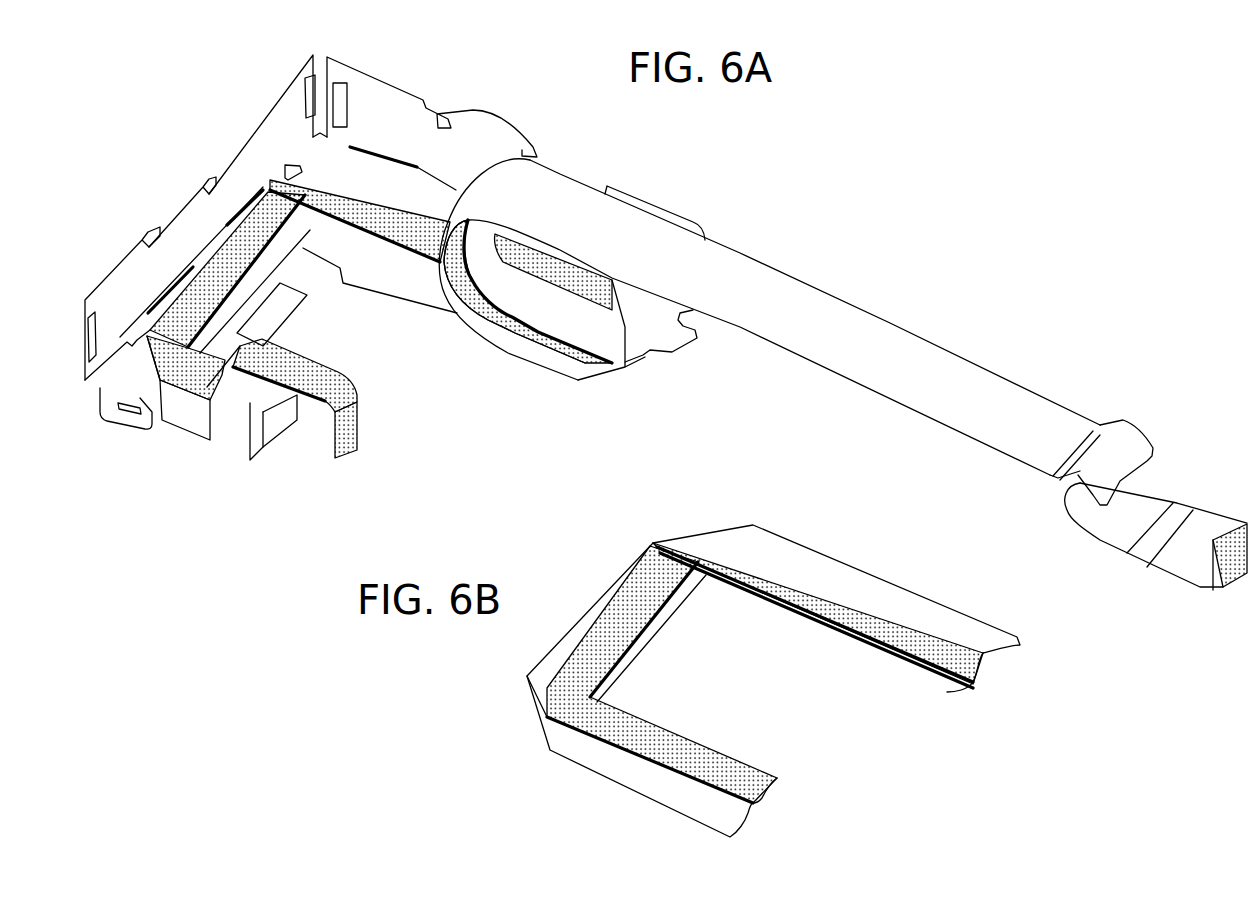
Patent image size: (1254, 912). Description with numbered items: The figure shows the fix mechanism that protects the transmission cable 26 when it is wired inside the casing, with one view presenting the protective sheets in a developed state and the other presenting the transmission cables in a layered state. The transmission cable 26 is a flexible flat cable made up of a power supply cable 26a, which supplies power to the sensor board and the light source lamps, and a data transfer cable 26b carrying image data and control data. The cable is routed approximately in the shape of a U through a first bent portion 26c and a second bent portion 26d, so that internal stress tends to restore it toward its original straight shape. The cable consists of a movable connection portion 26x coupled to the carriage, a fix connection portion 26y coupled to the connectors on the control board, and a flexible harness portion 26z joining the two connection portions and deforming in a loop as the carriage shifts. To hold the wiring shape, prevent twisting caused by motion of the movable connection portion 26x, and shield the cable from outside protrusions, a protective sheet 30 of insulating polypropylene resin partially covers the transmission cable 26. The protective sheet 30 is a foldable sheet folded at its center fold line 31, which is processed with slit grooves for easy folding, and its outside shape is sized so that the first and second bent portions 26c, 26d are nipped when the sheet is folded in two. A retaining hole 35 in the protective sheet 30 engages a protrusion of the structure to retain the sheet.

In FIG. 6A, the transmission cable 26 is at (802, 242).
In FIG. 6B, the transmission cable 26 is at (578, 592).
In FIG. 6A, the power supply cable 26a is at (262, 447).
In FIG. 6B, the power supply cable 26a is at (790, 540).
In FIG. 6A, the data transfer cable 26b is at (528, 350).
In FIG. 6B, the data transfer cable 26b is at (820, 603).
In FIG. 6A, the first bent portion 26c is at (316, 158).
In FIG. 6B, the first bent portion 26c is at (706, 540).
In FIG. 6A, the second bent portion 26d is at (140, 380).
In FIG. 6B, the second bent portion 26d is at (530, 722).
In FIG. 6A, the movable connection portion 26x is at (900, 330).
In FIG. 6A, the fix connection portion 26y is at (318, 352).
In FIG. 6A, the flexible harness portion 26z is at (478, 172).
In FIG. 6A, the protective sheet 30 is at (125, 262).
In FIG. 6A, the fold line 31 is at (275, 183).
In FIG. 6A, the retaining hole 35 is at (128, 425).